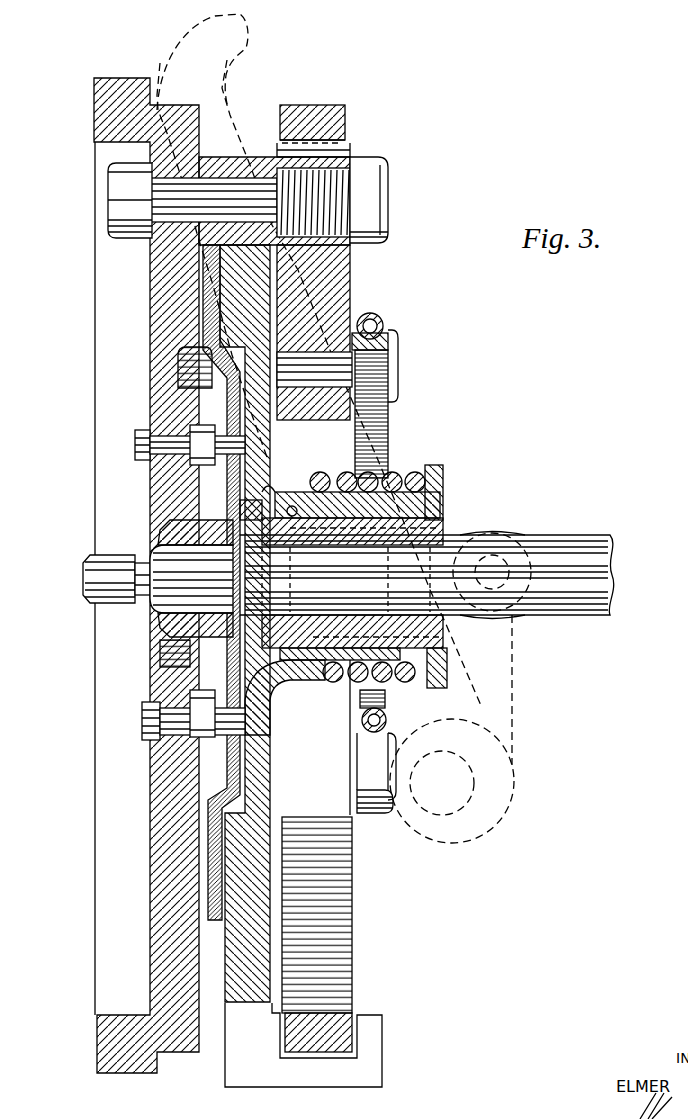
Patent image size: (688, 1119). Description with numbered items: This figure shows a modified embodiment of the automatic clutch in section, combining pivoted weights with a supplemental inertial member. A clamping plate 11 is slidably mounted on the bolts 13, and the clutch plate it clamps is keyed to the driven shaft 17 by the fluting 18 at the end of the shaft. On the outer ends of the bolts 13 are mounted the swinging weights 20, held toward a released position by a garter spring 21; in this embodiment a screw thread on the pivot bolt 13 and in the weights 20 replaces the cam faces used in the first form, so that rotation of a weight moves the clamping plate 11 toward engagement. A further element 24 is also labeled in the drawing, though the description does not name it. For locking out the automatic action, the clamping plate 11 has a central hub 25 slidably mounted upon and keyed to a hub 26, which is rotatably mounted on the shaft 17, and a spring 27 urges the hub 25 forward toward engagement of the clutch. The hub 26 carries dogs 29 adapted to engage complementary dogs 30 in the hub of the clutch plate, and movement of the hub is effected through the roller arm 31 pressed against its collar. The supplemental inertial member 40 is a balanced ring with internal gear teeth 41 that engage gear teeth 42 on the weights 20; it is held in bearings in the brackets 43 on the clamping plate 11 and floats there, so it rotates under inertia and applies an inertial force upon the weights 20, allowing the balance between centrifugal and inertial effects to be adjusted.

The clamping plate 11 is at (261, 157).
The bolts 13 is at (377, 198).
The driven shaft 17 is at (612, 573).
The fluting 18 is at (157, 603).
The swinging weights 20 is at (340, 284).
The garter spring 21 is at (383, 319).
The stud 24 is at (392, 363).
The central hub 25 is at (283, 472).
The hub 26 is at (370, 538).
The spring 27 is at (413, 472).
The dogs 29 is at (290, 473).
The complementary dogs 30 is at (272, 463).
The roller arm 31 is at (445, 480).
The supplemental inertial member 40 is at (337, 115).
The internal gear teeth 41 is at (340, 149).
The gear teeth 42 is at (352, 141).
The brackets 43 is at (373, 1038).